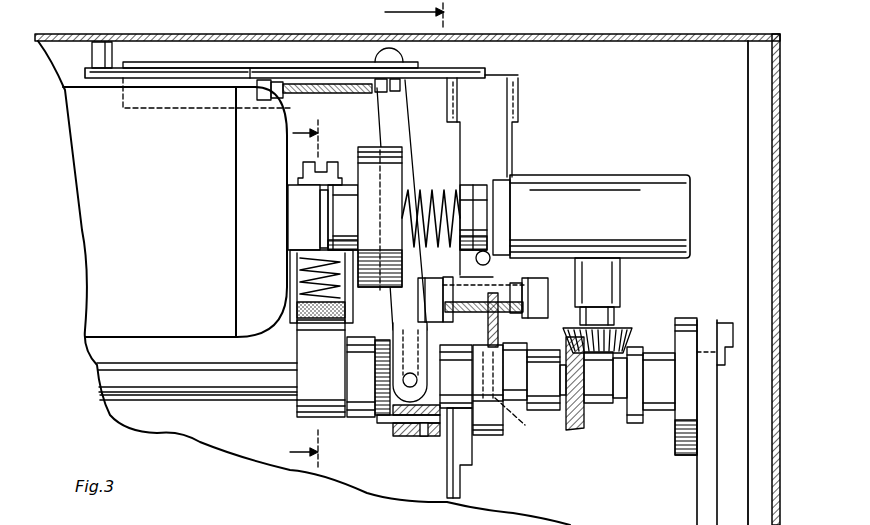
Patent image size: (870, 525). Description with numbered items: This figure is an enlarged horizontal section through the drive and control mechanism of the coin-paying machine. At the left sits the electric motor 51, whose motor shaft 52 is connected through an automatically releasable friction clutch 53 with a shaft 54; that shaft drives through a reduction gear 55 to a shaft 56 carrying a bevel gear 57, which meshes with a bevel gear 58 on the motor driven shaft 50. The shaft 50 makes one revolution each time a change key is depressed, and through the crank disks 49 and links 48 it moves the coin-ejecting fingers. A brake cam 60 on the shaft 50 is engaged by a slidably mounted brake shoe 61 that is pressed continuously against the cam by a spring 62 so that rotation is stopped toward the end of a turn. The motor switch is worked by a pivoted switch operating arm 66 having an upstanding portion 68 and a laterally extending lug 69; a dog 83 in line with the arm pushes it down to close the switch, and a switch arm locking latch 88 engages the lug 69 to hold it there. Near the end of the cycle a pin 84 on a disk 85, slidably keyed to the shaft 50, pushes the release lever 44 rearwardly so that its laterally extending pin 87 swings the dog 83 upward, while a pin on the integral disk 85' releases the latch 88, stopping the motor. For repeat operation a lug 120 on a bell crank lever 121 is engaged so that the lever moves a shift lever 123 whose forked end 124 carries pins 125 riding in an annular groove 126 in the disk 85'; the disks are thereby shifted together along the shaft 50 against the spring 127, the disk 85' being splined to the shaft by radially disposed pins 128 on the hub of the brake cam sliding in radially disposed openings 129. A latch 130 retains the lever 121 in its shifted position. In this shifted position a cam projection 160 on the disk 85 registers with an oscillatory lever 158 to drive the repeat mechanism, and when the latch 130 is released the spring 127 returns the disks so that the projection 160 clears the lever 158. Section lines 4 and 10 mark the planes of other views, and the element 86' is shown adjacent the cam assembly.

The section line 4- 4 is at (422, 15).
The section line 10- 10 is at (316, 294).
The release lever 44 is at (525, 345).
The links 48 is at (707, 497).
The crank disks 49 is at (688, 440).
The motor driven shaft 50 is at (222, 388).
The electric motor 51 is at (100, 236).
The motor shaft 52 is at (320, 222).
The friction clutch 53 is at (397, 178).
The shaft 54 is at (480, 182).
The reduction gear 55 is at (617, 190).
The shaft 56 is at (620, 308).
The bevel gear 57 is at (624, 340).
The bevel gear 58 is at (582, 424).
The brake cam 60 is at (296, 414).
The brake shoe 61 is at (302, 316).
The spring 62 is at (295, 282).
The switch operating arm 66 is at (507, 146).
The upstanding portion 68 is at (478, 296).
The laterally extending lug 69 is at (440, 306).
The dog 83 is at (498, 318).
The pin 84 is at (543, 380).
The disk 85 is at (501, 400).
The disk 85' is at (416, 449).
The cam follower 86' is at (456, 376).
The laterally extending pin 87 is at (515, 371).
The switch arm locking latch 88 is at (488, 314).
The lug 120 is at (88, 53).
The bell crank lever 121 is at (176, 74).
The shift lever 123 is at (400, 128).
The forked end 124 is at (402, 313).
The pins 125 is at (382, 375).
The annular groove 126 is at (408, 440).
The spring 127 is at (330, 94).
The radially disposed pins 128 is at (387, 424).
The radially disposed openings 129 is at (435, 438).
The latch 130 is at (437, 70).
The oscillatory lever 158 is at (462, 470).
The cam projection 160 is at (523, 417).